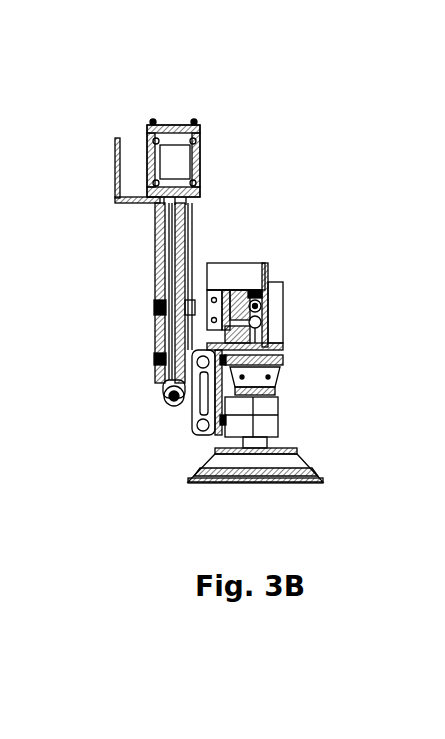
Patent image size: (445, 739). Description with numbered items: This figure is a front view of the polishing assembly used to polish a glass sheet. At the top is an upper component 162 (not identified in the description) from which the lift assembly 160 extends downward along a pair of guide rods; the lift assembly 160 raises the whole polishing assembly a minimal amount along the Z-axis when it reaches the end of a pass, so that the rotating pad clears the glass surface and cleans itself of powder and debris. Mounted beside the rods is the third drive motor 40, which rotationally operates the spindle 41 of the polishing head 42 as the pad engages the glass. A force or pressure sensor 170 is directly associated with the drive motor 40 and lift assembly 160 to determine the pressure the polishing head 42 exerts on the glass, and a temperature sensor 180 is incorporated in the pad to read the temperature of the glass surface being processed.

The mounting block 162 is at (173, 122).
The lift assembly 160 is at (188, 233).
The third drive motor 40 is at (287, 313).
The force or pressure sensor 170 is at (235, 333).
The spindle 41 is at (280, 440).
The temperature sensor 180 is at (330, 470).
The polishing head 42 is at (280, 483).